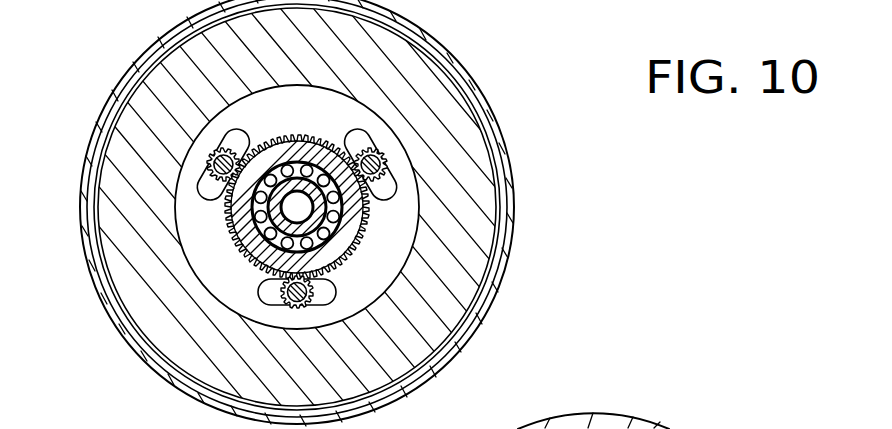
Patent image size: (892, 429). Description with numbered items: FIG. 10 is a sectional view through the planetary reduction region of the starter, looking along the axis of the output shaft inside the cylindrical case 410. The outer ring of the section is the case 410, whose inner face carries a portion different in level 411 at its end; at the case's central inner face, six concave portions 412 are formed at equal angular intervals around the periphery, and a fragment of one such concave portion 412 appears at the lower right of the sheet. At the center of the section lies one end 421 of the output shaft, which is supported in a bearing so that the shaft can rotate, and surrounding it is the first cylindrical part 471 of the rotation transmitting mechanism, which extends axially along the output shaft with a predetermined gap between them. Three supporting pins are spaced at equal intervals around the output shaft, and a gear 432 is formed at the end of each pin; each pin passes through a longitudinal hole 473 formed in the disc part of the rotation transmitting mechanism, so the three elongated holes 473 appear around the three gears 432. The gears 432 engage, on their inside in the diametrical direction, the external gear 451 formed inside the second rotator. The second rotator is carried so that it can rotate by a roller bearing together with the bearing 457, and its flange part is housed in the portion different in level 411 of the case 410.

The cylindrical case 410 is at (413, 32).
The portion different in level 411 is at (448, 72).
The gear 432 is at (384, 159).
The longitudinal hole 473 is at (380, 187).
The external gear 451 is at (363, 230).
The bearing 457 is at (450, 332).
The one end of the output shaft 421 is at (268, 222).
The first cylindrical part 471 is at (297, 207).
The concave portion 412 is at (643, 425).